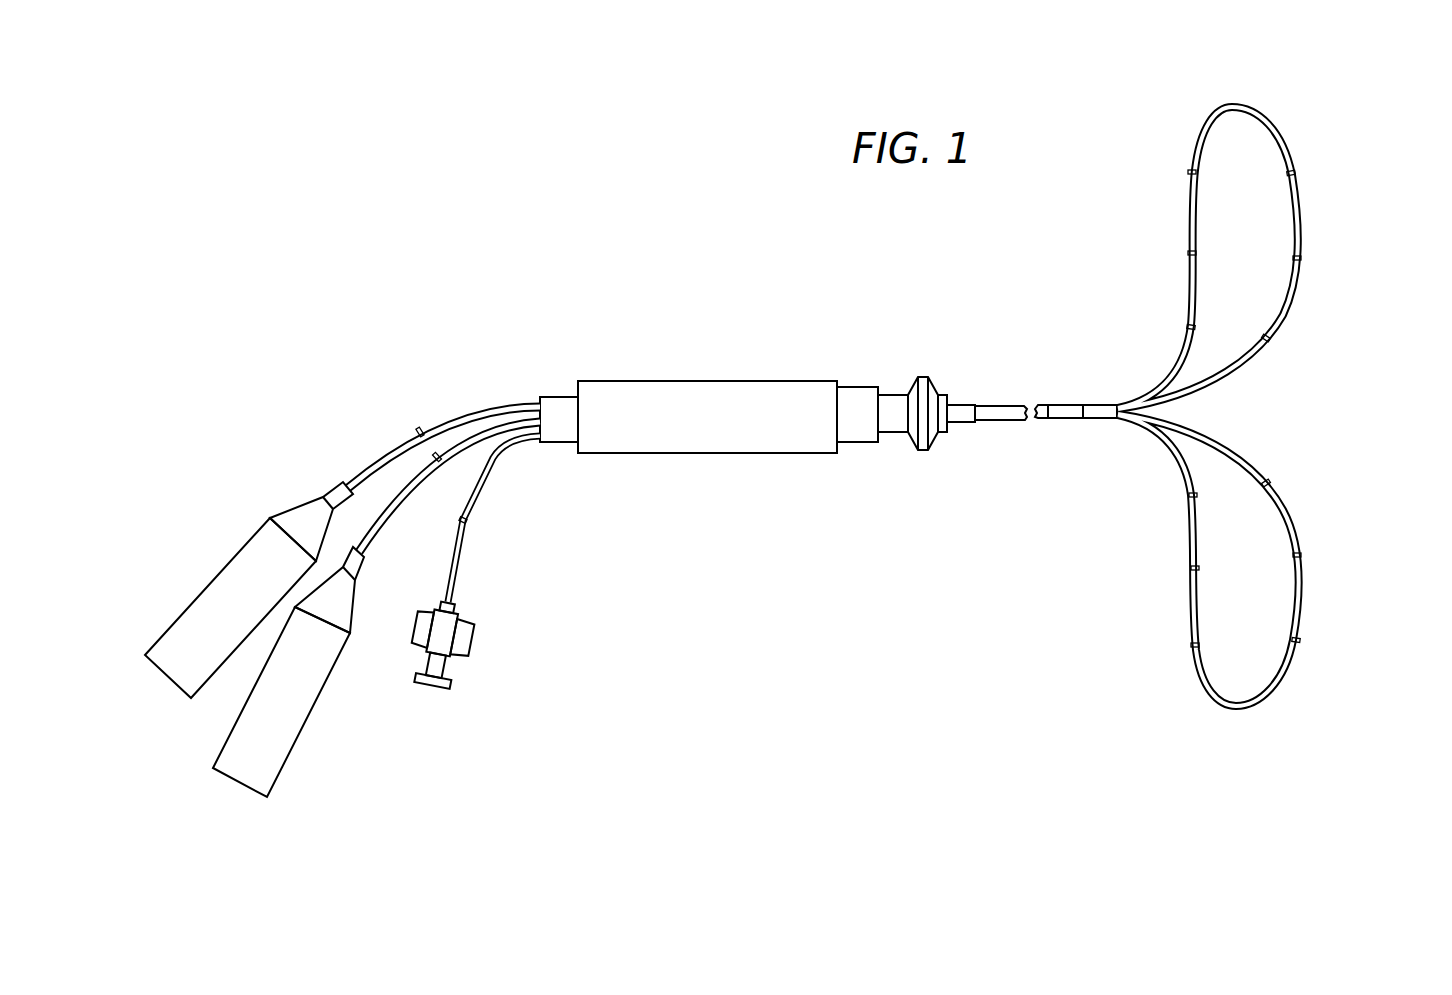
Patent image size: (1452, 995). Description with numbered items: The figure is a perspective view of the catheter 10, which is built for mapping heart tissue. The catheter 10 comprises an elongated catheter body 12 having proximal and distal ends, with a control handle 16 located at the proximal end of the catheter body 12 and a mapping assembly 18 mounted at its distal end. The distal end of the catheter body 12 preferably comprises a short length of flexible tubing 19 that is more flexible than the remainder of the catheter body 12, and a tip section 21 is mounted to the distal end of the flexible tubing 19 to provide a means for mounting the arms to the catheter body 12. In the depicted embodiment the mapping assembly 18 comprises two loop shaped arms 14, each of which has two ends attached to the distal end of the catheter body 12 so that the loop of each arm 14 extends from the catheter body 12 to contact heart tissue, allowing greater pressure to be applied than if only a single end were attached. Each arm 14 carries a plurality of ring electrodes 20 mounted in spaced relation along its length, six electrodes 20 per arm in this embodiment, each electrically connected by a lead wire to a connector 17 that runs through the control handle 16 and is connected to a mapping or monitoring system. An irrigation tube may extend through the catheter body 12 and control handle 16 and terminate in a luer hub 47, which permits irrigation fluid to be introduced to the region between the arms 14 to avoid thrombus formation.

The catheter 10 is at (906, 342).
The catheter body 12 is at (1213, 408).
The loop shaped arm 14 is at (1228, 106).
The control handle 16 is at (727, 440).
The connector 17 is at (175, 688).
The mapping assembly 18 is at (1277, 408).
The flexible tubing 19 is at (1062, 419).
The electrode 20 is at (1237, 408).
The tip section 21 is at (1103, 419).
The luer hub 47 is at (432, 690).